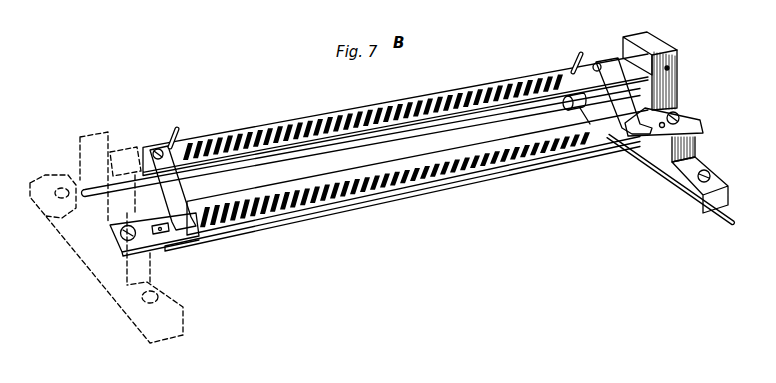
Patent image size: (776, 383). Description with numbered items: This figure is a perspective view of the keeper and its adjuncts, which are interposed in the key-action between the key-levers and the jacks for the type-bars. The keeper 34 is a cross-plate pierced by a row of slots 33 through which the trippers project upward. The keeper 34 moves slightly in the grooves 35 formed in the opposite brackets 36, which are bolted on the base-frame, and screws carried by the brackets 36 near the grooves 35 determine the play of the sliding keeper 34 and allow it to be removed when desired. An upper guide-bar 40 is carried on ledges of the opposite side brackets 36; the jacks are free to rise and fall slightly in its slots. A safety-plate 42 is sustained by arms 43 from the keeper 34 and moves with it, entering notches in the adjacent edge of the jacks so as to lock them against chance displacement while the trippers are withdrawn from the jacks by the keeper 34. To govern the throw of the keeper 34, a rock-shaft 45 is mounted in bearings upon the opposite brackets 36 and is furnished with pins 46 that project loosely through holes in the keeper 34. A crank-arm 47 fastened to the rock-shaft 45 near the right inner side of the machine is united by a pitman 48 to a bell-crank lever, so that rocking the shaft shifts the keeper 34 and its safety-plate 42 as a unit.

The slots 33 is at (286, 125).
The keeper 34 is at (218, 139).
The grooves 35 is at (657, 55).
The brackets 36 is at (710, 150).
The upper guide-bar 40 is at (147, 245).
The safety-plate 42 is at (609, 145).
The arms 43 is at (401, 144).
The rock-shaft 45 is at (287, 172).
The pins 46 is at (172, 129).
The crank-arm 47 is at (650, 86).
The pitman 48 is at (680, 182).